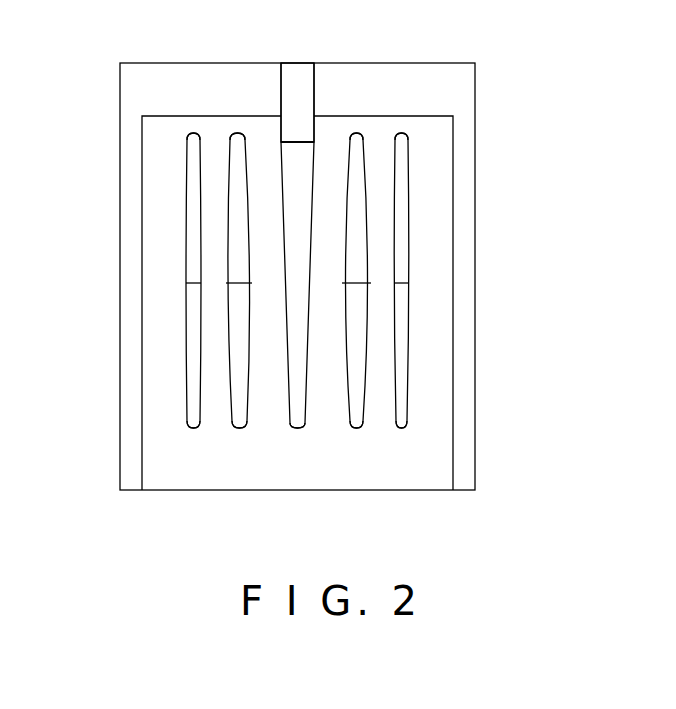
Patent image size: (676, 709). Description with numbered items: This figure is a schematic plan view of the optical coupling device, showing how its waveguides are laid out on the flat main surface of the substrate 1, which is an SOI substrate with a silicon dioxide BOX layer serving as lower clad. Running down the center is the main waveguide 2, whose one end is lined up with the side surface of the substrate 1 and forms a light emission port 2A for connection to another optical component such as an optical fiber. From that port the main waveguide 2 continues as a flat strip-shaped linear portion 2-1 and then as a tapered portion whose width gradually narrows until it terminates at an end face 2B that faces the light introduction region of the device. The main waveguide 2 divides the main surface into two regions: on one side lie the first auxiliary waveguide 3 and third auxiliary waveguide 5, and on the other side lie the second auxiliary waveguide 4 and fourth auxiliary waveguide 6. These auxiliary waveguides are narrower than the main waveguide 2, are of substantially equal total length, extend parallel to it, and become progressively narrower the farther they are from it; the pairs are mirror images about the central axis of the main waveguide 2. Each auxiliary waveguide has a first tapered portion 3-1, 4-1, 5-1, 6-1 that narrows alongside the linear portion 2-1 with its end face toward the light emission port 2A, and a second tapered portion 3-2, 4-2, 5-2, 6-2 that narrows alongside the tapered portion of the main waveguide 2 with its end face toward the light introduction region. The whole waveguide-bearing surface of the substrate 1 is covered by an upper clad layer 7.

The substrate 1 is at (162, 63).
The main waveguide 2 is at (278, 134).
The light emission port 2A is at (302, 63).
The linear portion 2-1 is at (301, 130).
The end face 2B is at (297, 430).
The first auxiliary waveguide 3 is at (238, 182).
The first tapered portion of first auxiliary waveguide 3-1 is at (238, 133).
The second tapered portion of first auxiliary waveguide 3-2 is at (238, 430).
The second auxiliary waveguide 4 is at (357, 255).
The first tapered portion of second auxiliary waveguide 4-1 is at (356, 133).
The second tapered portion of second auxiliary waveguide 4-2 is at (356, 430).
The third auxiliary waveguide 5 is at (192, 218).
The first tapered portion of third auxiliary waveguide 5-1 is at (190, 133).
The second tapered portion of third auxiliary waveguide 5-2 is at (190, 430).
The fourth auxiliary waveguide 6 is at (402, 302).
The first tapered portion of fourth auxiliary waveguide 6-1 is at (402, 133).
The second tapered portion of fourth auxiliary waveguide 6-2 is at (402, 430).
The upper clad layer 7 is at (138, 300).